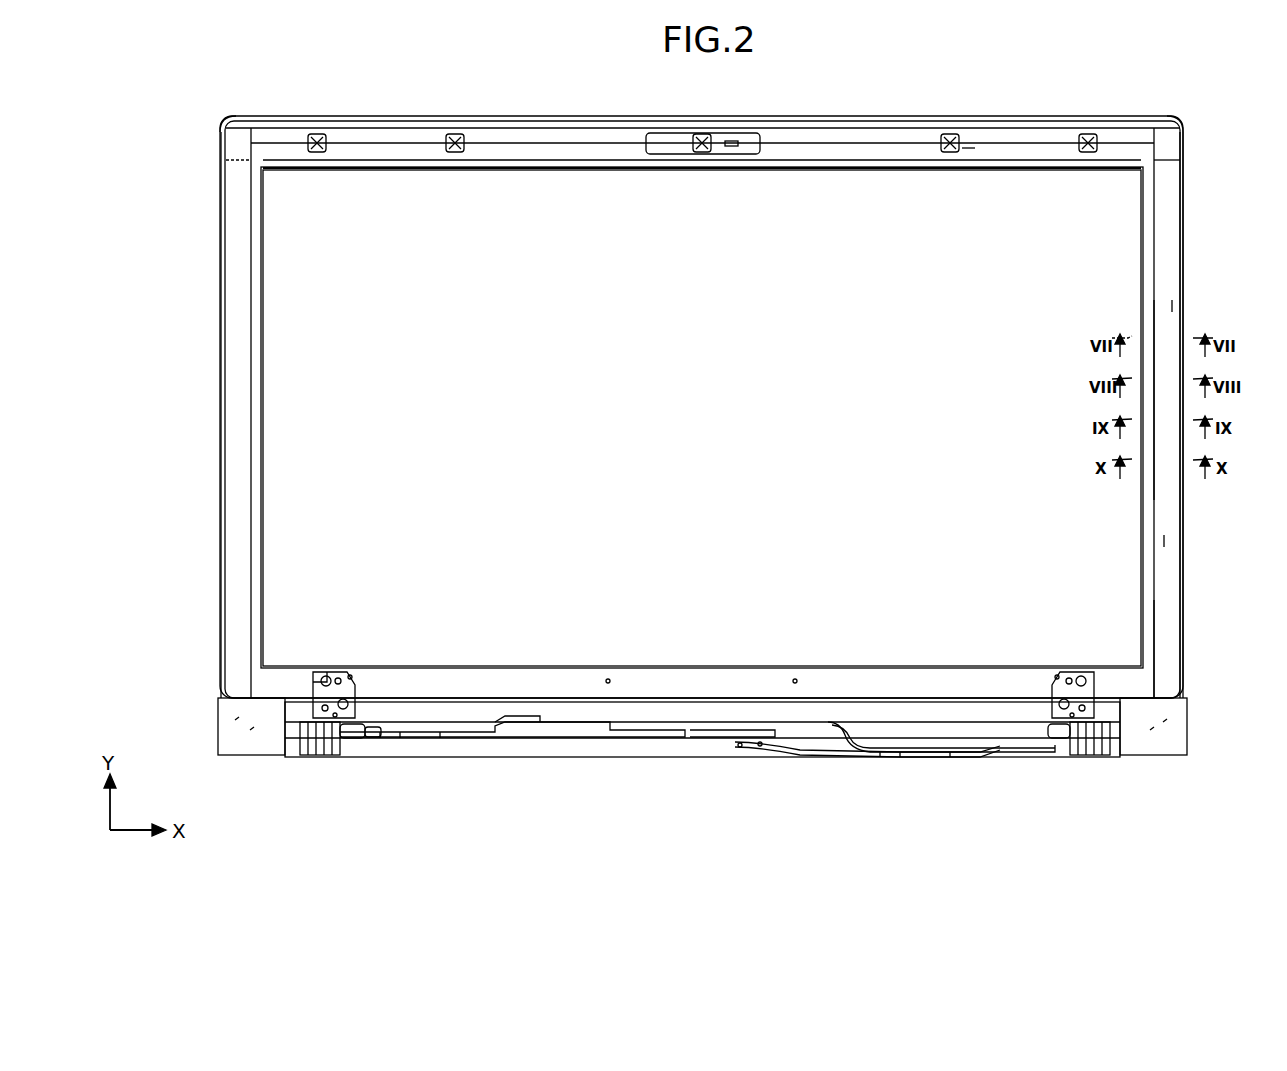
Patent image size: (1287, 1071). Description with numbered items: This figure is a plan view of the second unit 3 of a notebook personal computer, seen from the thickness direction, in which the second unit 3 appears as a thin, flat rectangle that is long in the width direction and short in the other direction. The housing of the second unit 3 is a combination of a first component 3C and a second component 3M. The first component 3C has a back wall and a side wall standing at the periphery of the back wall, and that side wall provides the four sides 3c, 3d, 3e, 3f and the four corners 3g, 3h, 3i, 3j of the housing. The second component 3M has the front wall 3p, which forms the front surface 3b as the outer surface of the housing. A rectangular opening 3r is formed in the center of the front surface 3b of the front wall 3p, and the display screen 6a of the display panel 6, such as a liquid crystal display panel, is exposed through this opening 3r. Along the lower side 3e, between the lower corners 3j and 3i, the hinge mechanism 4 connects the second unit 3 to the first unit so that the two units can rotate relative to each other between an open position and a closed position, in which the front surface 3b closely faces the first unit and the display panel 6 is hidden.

The second unit 3 is at (343, 115).
The corner 3g is at (222, 123).
The opening 3r is at (580, 178).
The side 3c is at (616, 118).
The display screen 6a is at (858, 192).
The front surface 3b is at (1027, 150).
The corner 3h is at (1181, 122).
The first component 3C is at (1185, 210).
The second component 3M is at (1167, 268).
The side 3d is at (1184, 568).
The front wall 3p is at (1170, 652).
The side 3f is at (221, 421).
The display panel 6 is at (284, 497).
The side 3e is at (720, 735).
The hinge mechanism 4 is at (312, 742).
The corner 3j is at (228, 737).
The corner 3i is at (1185, 735).